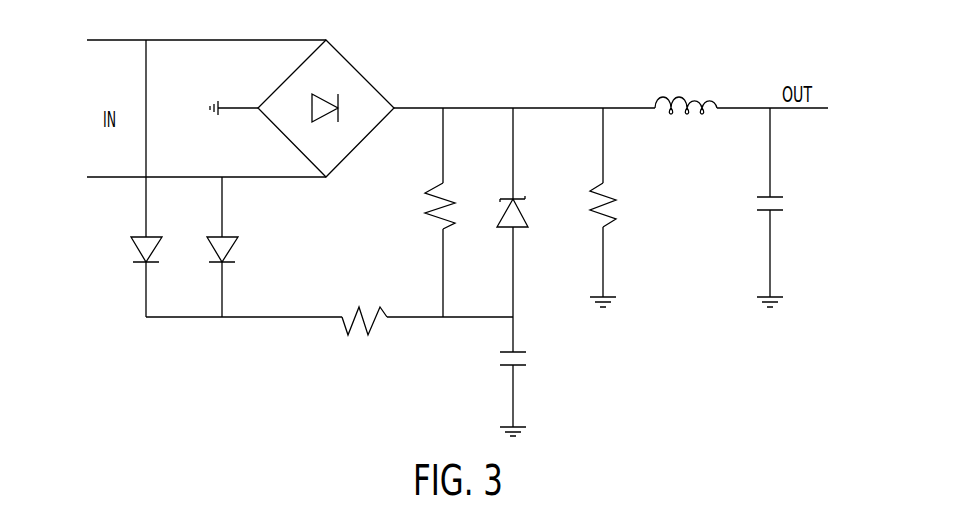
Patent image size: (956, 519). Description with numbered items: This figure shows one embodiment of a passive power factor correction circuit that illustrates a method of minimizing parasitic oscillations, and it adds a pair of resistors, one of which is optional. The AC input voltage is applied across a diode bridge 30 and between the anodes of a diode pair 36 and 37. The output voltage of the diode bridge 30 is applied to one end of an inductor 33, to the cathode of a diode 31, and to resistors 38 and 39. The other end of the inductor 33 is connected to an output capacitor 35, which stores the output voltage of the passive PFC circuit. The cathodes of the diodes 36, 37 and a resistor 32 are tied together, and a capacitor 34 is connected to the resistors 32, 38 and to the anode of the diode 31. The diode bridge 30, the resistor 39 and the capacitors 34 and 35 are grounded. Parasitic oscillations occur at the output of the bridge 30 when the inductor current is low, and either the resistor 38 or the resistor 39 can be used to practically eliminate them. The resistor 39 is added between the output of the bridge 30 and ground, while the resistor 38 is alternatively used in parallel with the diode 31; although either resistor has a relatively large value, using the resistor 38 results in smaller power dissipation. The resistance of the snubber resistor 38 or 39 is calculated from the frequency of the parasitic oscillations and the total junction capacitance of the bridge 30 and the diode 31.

The diode bridge 30 is at (362, 76).
The diode 31 is at (526, 215).
The resistor 32 is at (364, 337).
The inductor 33 is at (680, 96).
The capacitor 34 is at (526, 352).
The output capacitor 35 is at (784, 197).
The diode 36 is at (136, 248).
The diode 37 is at (232, 248).
The resistor 38 is at (430, 220).
The resistor 39 is at (612, 197).